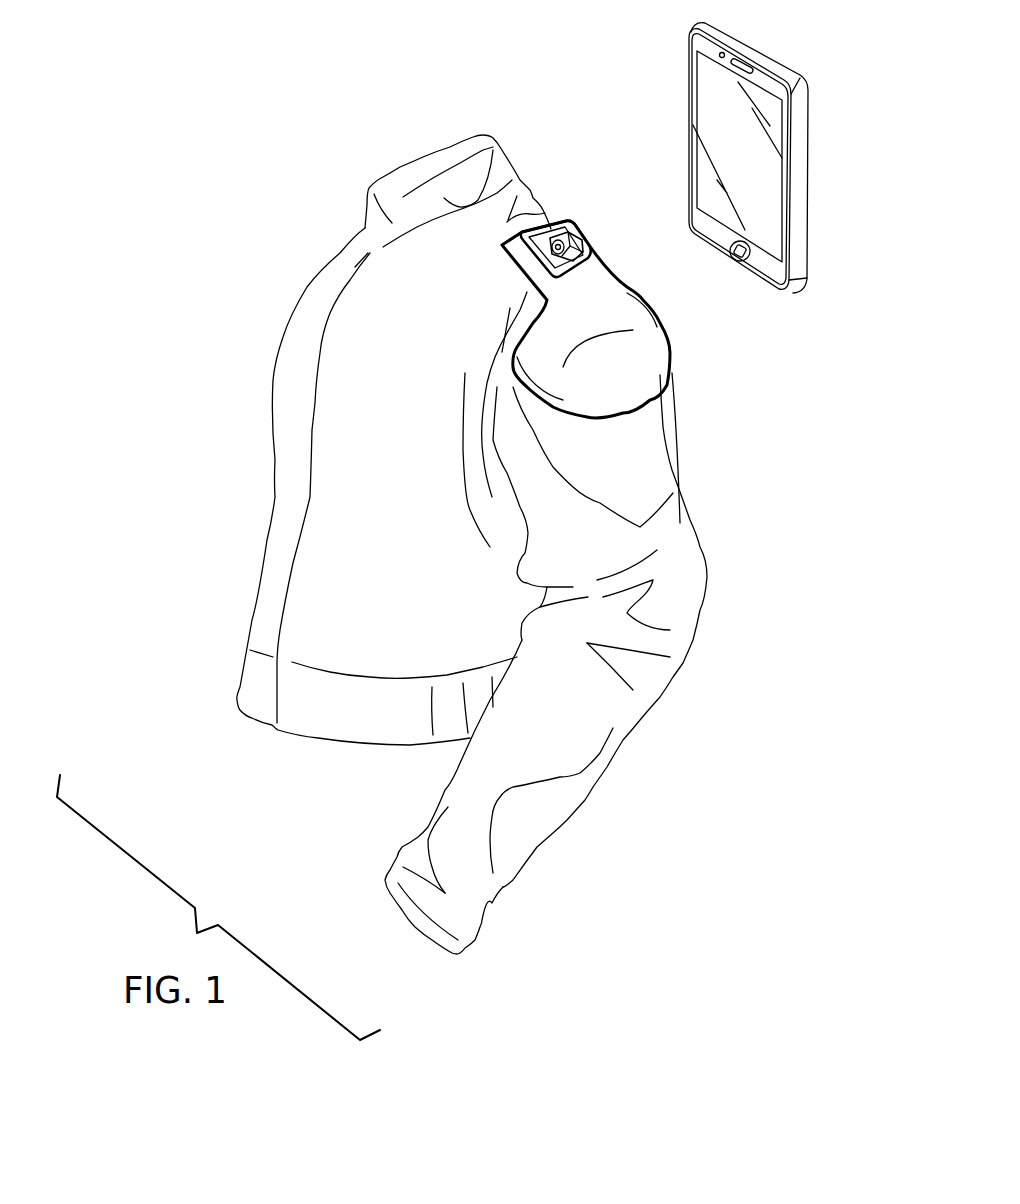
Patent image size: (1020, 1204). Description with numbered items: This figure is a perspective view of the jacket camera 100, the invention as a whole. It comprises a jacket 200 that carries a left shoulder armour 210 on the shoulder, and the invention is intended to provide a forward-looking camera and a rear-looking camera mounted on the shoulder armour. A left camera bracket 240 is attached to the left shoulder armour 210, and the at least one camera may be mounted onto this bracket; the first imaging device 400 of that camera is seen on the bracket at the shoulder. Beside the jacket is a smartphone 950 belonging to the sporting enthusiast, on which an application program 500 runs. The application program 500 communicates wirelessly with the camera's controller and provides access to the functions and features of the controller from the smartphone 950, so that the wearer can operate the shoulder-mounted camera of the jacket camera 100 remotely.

The jacket camera 100 is at (216, 178).
The jacket 200 is at (333, 553).
The left shoulder armour 210 is at (662, 373).
The left camera bracket 240 is at (524, 250).
The first imaging device 400 is at (552, 228).
The application program 500 is at (703, 83).
The smartphone 950 is at (800, 272).